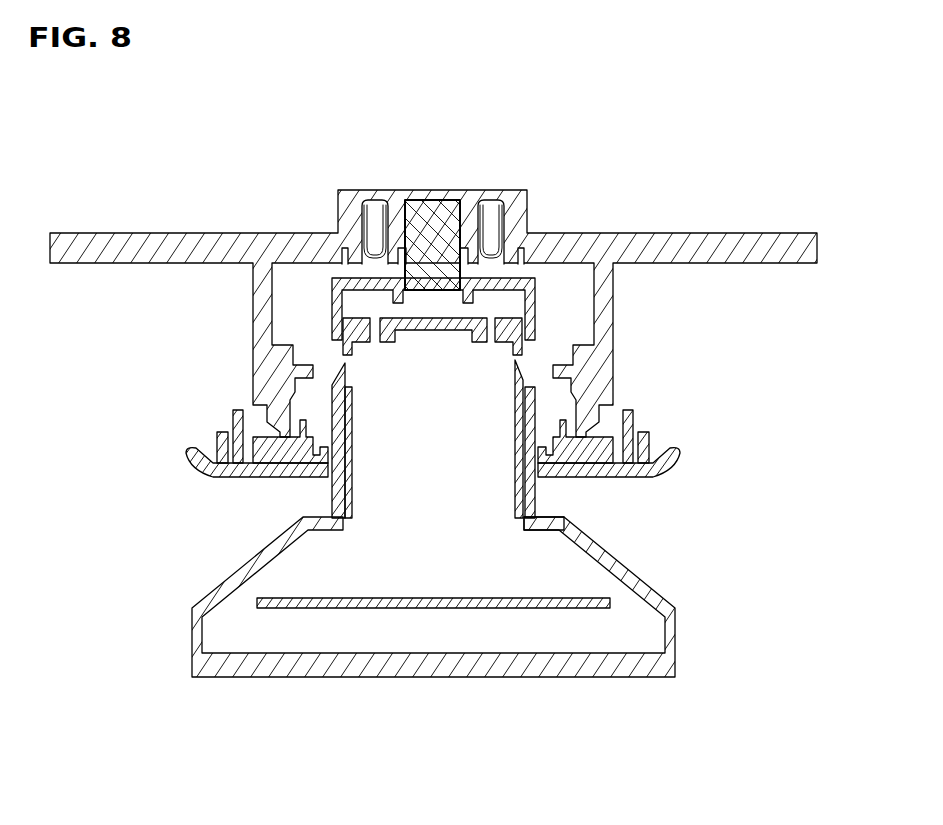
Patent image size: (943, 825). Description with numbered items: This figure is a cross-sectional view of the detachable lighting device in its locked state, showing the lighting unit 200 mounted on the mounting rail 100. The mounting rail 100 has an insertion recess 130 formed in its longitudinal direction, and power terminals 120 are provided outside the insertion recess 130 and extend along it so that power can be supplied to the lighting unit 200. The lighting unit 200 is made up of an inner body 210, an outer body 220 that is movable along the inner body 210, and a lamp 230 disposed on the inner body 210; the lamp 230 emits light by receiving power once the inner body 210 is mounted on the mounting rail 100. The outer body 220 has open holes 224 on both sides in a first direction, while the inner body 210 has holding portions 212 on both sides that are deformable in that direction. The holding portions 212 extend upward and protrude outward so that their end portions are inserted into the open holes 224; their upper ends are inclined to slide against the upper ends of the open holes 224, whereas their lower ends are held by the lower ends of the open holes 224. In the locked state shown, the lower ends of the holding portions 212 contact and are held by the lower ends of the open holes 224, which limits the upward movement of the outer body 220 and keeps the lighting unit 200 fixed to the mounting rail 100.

The mounting rail 100 is at (622, 234).
The power terminals 120 is at (483, 228).
The insertion recess 130 is at (398, 207).
The open holes 224 is at (333, 343).
The holding portions 212 is at (522, 373).
The inner body 210 is at (347, 488).
The outer body 220 is at (572, 530).
The lighting unit 200 is at (658, 588).
The lamp 230 is at (500, 608).